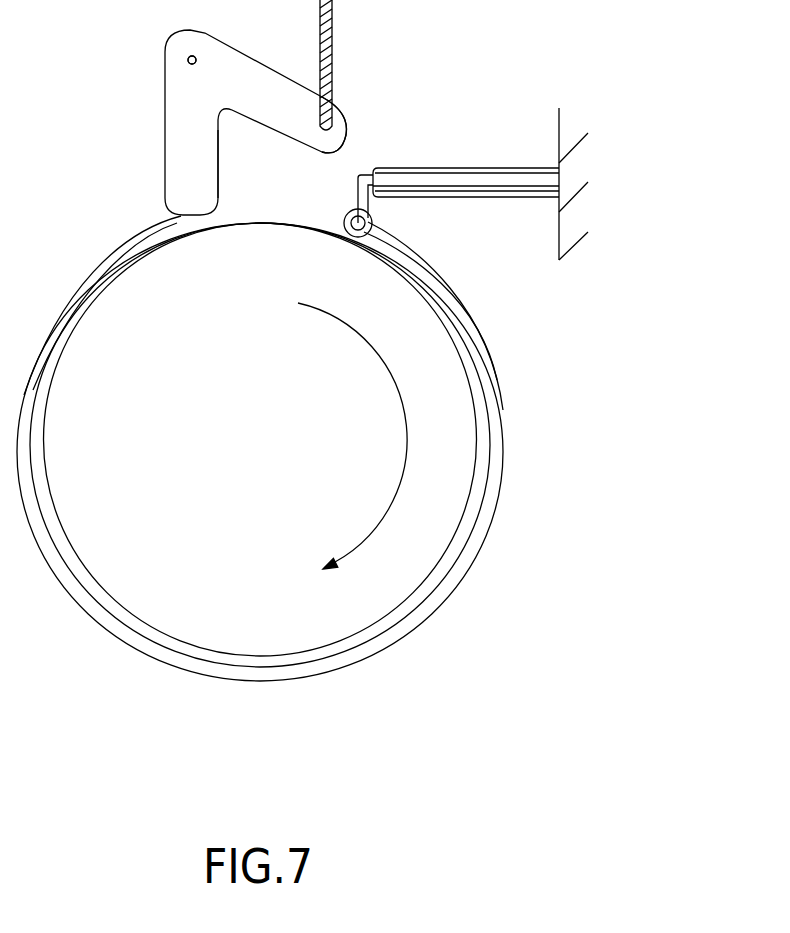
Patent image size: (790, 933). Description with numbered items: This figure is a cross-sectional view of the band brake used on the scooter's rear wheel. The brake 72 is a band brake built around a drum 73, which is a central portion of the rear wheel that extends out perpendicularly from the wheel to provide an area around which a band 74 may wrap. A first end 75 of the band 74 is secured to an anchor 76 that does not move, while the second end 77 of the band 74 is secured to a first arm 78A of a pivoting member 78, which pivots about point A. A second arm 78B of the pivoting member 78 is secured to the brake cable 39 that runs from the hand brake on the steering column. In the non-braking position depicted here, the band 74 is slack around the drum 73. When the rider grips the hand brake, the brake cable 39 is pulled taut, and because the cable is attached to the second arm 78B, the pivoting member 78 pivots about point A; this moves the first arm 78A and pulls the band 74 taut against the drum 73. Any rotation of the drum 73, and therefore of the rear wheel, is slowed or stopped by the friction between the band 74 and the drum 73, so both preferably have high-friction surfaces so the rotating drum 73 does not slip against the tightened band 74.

The brake cable 39 is at (333, 73).
The brake 72 is at (590, 362).
The drum 73 is at (270, 447).
The band 74 is at (498, 488).
The first end 75 is at (372, 226).
The anchor 76 is at (445, 168).
The second end 77 is at (142, 212).
The pivoting member 78 is at (192, 111).
The first arm 78A is at (222, 190).
The second arm 78B is at (332, 148).
The pivot point A is at (198, 50).